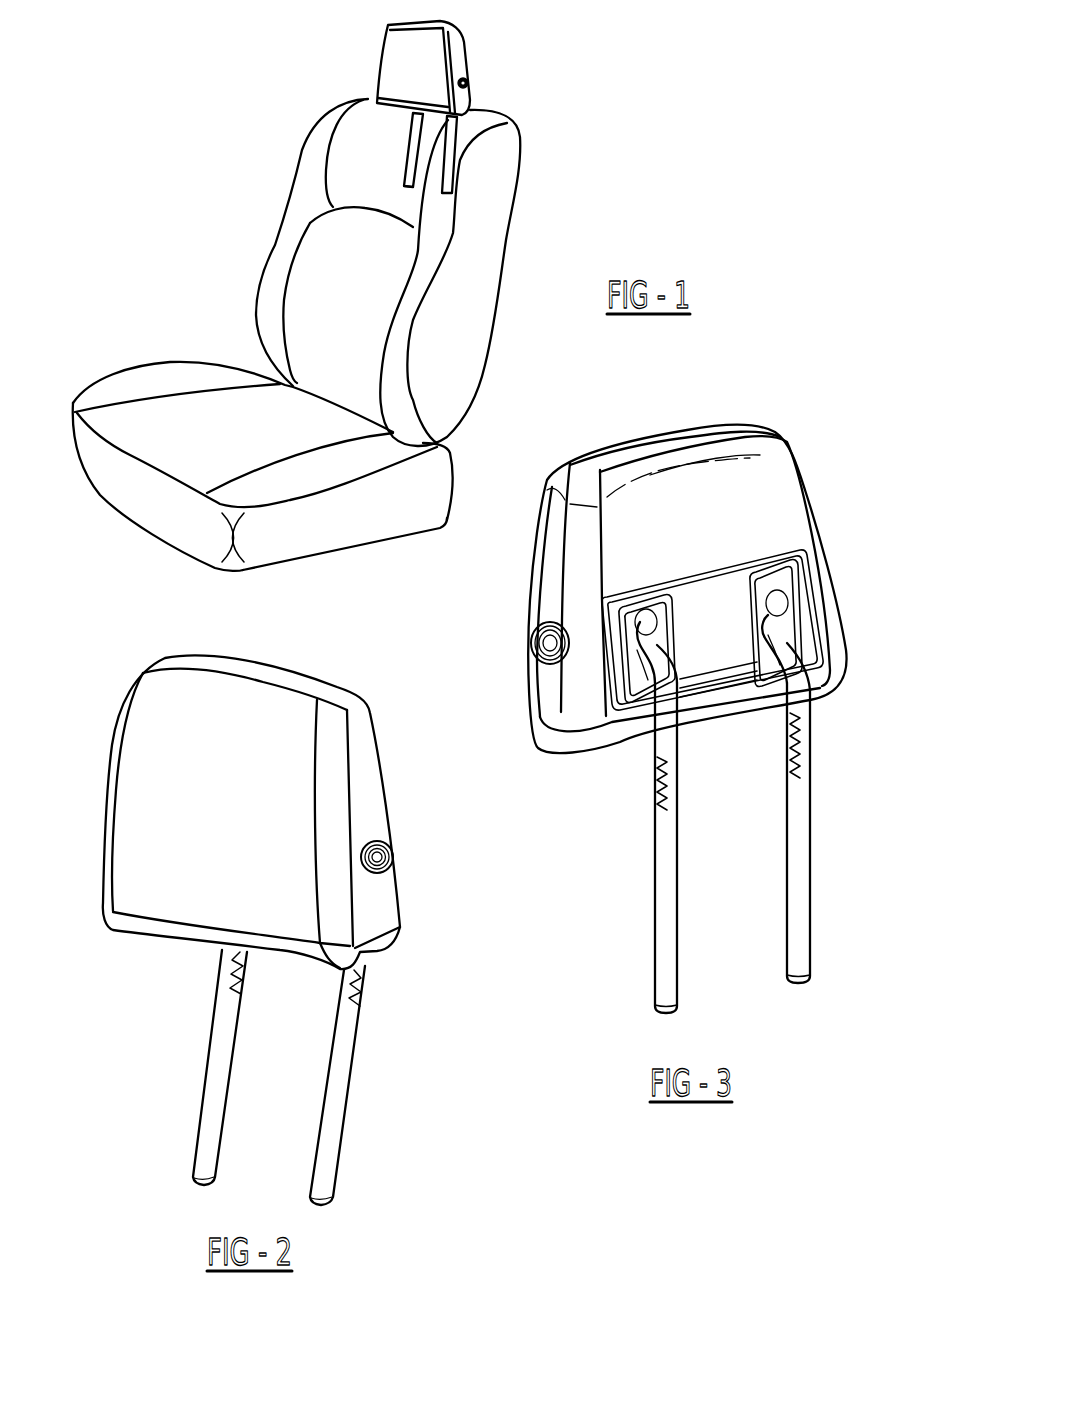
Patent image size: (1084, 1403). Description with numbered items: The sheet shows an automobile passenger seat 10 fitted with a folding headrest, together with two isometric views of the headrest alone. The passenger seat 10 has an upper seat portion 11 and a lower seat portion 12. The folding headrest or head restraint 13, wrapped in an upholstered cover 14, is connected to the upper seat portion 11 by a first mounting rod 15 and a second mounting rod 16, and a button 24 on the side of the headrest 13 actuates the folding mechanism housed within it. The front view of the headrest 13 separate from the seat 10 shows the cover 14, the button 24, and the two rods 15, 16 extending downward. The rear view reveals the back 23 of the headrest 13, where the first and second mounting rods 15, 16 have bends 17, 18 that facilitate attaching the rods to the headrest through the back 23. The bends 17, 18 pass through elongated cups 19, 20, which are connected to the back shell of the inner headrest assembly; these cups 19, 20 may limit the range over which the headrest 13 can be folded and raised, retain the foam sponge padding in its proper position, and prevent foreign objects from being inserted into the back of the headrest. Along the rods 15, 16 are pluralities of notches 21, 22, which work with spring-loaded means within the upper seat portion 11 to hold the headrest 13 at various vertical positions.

In FIG. 1, the automobile passenger seat 10 is at (220, 270).
In FIG. 1, the upper seat portion 11 is at (500, 165).
In FIG. 1, the lower seat portion 12 is at (140, 378).
In FIG. 1, the folding headrest 13 is at (346, 51).
In FIG. 2, the folding headrest 13 is at (121, 661).
In FIG. 3, the folding headrest 13 is at (800, 431).
In FIG. 1, the upholstered cover 14 is at (390, 78).
In FIG. 2, the upholstered cover 14 is at (143, 738).
In FIG. 3, the upholstered cover 14 is at (530, 552).
In FIG. 1, the first mounting rod 15 is at (406, 168).
In FIG. 2, the first mounting rod 15 is at (217, 1135).
In FIG. 3, the first mounting rod 15 is at (807, 853).
In FIG. 1, the second mounting rod 16 is at (453, 183).
In FIG. 2, the second mounting rod 16 is at (337, 1107).
In FIG. 3, the second mounting rod 16 is at (675, 893).
In FIG. 3, the bend 17 is at (797, 660).
In FIG. 3, the bend 18 is at (667, 690).
In FIG. 3, the elongated cup 19 is at (793, 567).
In FIG. 3, the elongated cup 20 is at (660, 603).
In FIG. 3, the notches 21 is at (782, 792).
In FIG. 3, the notches 22 is at (652, 828).
In FIG. 3, the back 23 is at (743, 478).
In FIG. 1, the button 24 is at (470, 84).
In FIG. 2, the button 24 is at (385, 858).
In FIG. 3, the button 24 is at (540, 647).